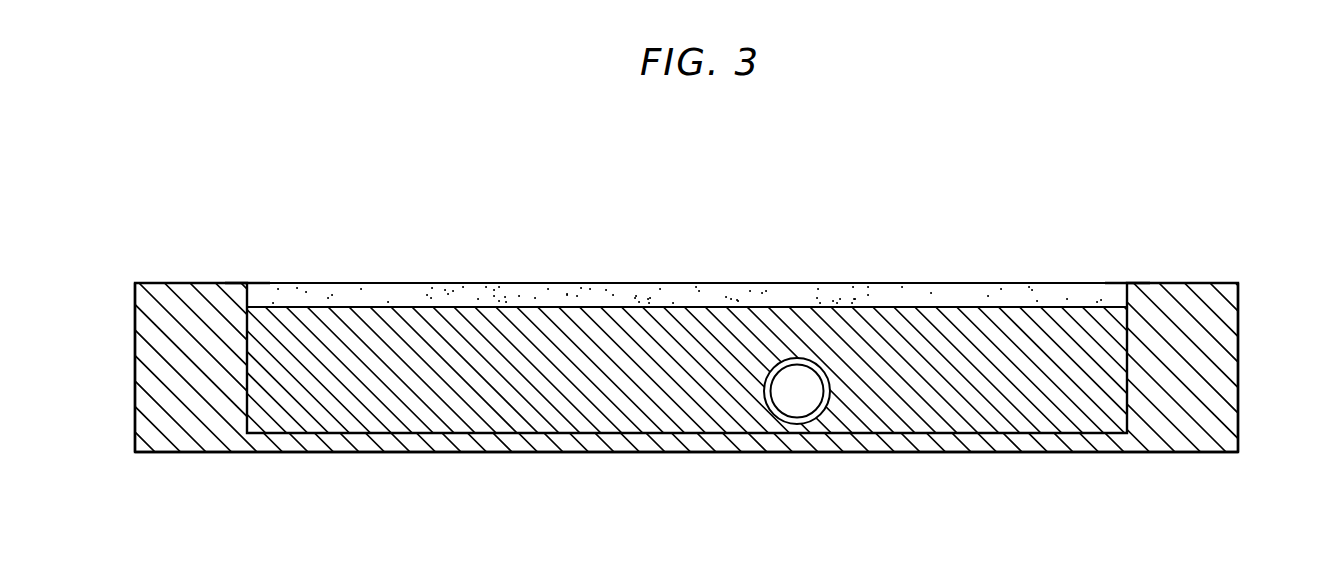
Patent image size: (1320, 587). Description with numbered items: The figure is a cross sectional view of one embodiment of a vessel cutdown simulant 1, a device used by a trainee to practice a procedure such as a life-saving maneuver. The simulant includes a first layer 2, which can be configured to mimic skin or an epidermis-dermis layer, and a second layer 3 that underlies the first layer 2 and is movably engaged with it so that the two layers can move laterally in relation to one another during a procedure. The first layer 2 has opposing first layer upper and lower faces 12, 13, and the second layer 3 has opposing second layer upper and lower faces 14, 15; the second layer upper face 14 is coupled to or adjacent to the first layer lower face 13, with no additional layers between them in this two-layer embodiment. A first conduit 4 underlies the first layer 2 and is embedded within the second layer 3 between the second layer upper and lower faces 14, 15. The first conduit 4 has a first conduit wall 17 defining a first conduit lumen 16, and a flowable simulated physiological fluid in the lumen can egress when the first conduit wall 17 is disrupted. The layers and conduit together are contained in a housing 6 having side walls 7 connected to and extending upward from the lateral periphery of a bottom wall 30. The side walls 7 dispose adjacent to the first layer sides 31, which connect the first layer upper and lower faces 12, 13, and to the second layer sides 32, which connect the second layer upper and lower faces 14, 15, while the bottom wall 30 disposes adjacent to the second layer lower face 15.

The vessel cutdown simulant 1 is at (966, 142).
The first layer 2 is at (687, 256).
The second layer 3 is at (453, 422).
The first conduit 4 is at (788, 382).
The housing 6 is at (1225, 337).
The side wall 7 is at (135, 395).
The first layer upper face 12 is at (957, 300).
The first layer lower face 13 is at (705, 305).
The second layer upper face 14 is at (547, 307).
The second layer lower face 15 is at (608, 427).
The first conduit lumen 16 is at (788, 390).
The first conduit wall 17 is at (788, 420).
The bottom wall 30 is at (372, 452).
The first layer sides 31 is at (247, 300).
The second layer sides 32 is at (247, 378).